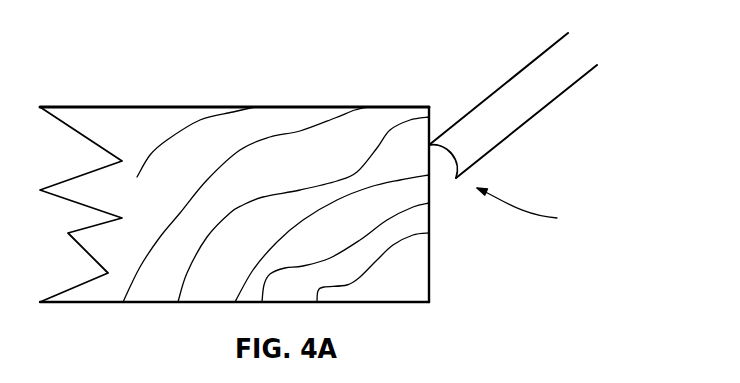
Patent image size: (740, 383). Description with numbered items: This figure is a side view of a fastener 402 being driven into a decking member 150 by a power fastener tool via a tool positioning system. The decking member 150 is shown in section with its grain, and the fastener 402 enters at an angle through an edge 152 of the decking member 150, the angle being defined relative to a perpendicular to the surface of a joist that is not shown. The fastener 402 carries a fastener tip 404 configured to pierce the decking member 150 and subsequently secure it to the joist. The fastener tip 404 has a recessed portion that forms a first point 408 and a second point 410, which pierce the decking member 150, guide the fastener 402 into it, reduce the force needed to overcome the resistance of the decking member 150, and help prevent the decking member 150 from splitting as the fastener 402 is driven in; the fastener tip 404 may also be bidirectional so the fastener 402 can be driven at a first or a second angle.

The decking member 150 is at (260, 130).
The edge 152 is at (430, 257).
The fastener 402 is at (542, 108).
The fastener tip 404 is at (534, 210).
The first point 408 is at (429, 145).
The second point 410 is at (456, 183).